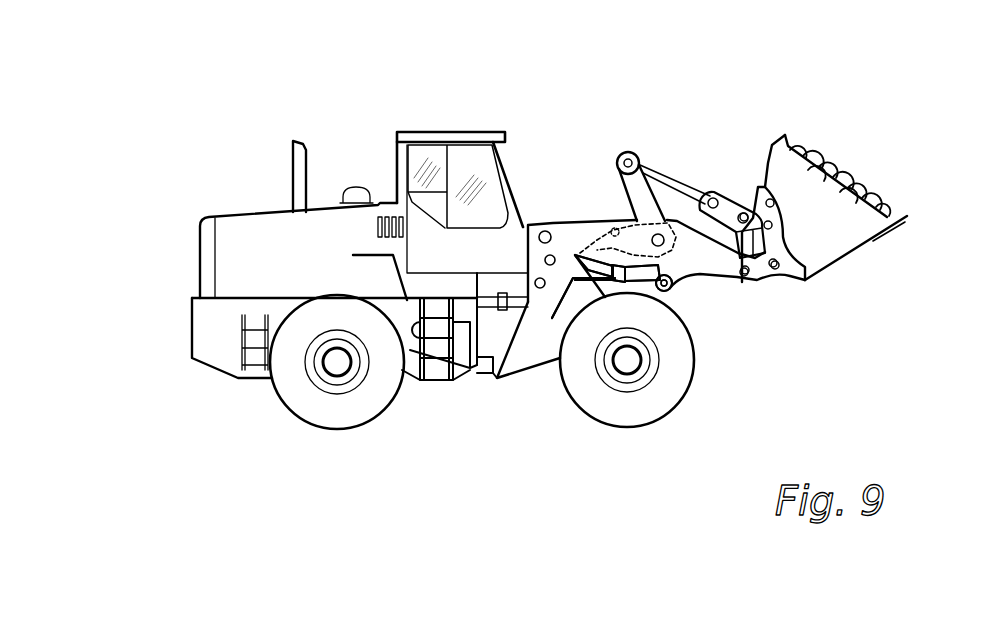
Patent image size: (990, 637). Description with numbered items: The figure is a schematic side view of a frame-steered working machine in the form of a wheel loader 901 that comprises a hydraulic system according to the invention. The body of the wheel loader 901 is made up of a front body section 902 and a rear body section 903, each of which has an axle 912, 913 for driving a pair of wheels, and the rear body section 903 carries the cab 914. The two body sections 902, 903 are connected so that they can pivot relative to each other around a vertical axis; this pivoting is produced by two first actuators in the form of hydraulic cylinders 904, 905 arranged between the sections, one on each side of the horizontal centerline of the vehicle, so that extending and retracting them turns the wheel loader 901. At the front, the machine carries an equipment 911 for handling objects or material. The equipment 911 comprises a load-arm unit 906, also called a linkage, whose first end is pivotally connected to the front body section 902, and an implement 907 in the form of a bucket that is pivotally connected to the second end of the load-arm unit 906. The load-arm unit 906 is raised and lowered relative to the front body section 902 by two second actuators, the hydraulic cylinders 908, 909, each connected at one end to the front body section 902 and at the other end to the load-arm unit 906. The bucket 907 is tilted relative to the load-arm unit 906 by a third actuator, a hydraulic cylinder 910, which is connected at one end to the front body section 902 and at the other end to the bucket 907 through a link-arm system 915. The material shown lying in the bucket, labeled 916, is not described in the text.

The wheel loader 901 is at (362, 115).
The front body section 902 is at (537, 360).
The rear body section 903 is at (225, 352).
The hydraulic cylinder 904 is at (497, 378).
The hydraulic cylinder 905 is at (514, 383).
The load-arm unit 906 is at (691, 240).
The implement 907 is at (837, 262).
The hydraulic cylinder 908 is at (667, 290).
The hydraulic cylinder 909 is at (765, 317).
The hydraulic cylinder 910 is at (557, 218).
The equipment 911 is at (715, 126).
The axle 912 is at (337, 367).
The axle 913 is at (627, 363).
The cab 914 is at (462, 132).
The link-arm system 915 is at (753, 213).
The material in bucket 916 is at (855, 178).